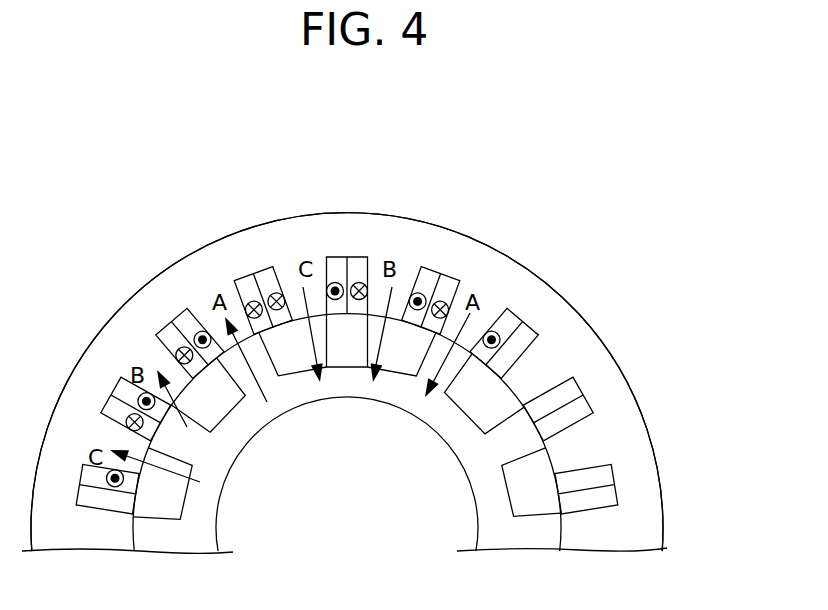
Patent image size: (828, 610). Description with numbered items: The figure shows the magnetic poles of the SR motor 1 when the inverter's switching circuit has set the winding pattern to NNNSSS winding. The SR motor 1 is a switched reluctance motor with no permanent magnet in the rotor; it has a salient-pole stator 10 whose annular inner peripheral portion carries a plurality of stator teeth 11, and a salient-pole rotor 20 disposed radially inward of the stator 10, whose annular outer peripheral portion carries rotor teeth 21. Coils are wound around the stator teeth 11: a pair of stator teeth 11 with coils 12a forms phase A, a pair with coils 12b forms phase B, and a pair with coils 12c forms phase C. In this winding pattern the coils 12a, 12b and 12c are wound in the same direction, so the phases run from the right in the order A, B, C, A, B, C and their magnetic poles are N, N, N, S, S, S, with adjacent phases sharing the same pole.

The SR motor 1 is at (517, 168).
The stator 10 is at (385, 214).
The stator teeth 11 is at (578, 447).
The coils (phase A) 12a is at (512, 318).
The coils (phase B) 12b is at (430, 282).
The coils (phase C) 12c is at (338, 258).
The rotor 20 is at (412, 420).
The rotor teeth 21 is at (527, 455).